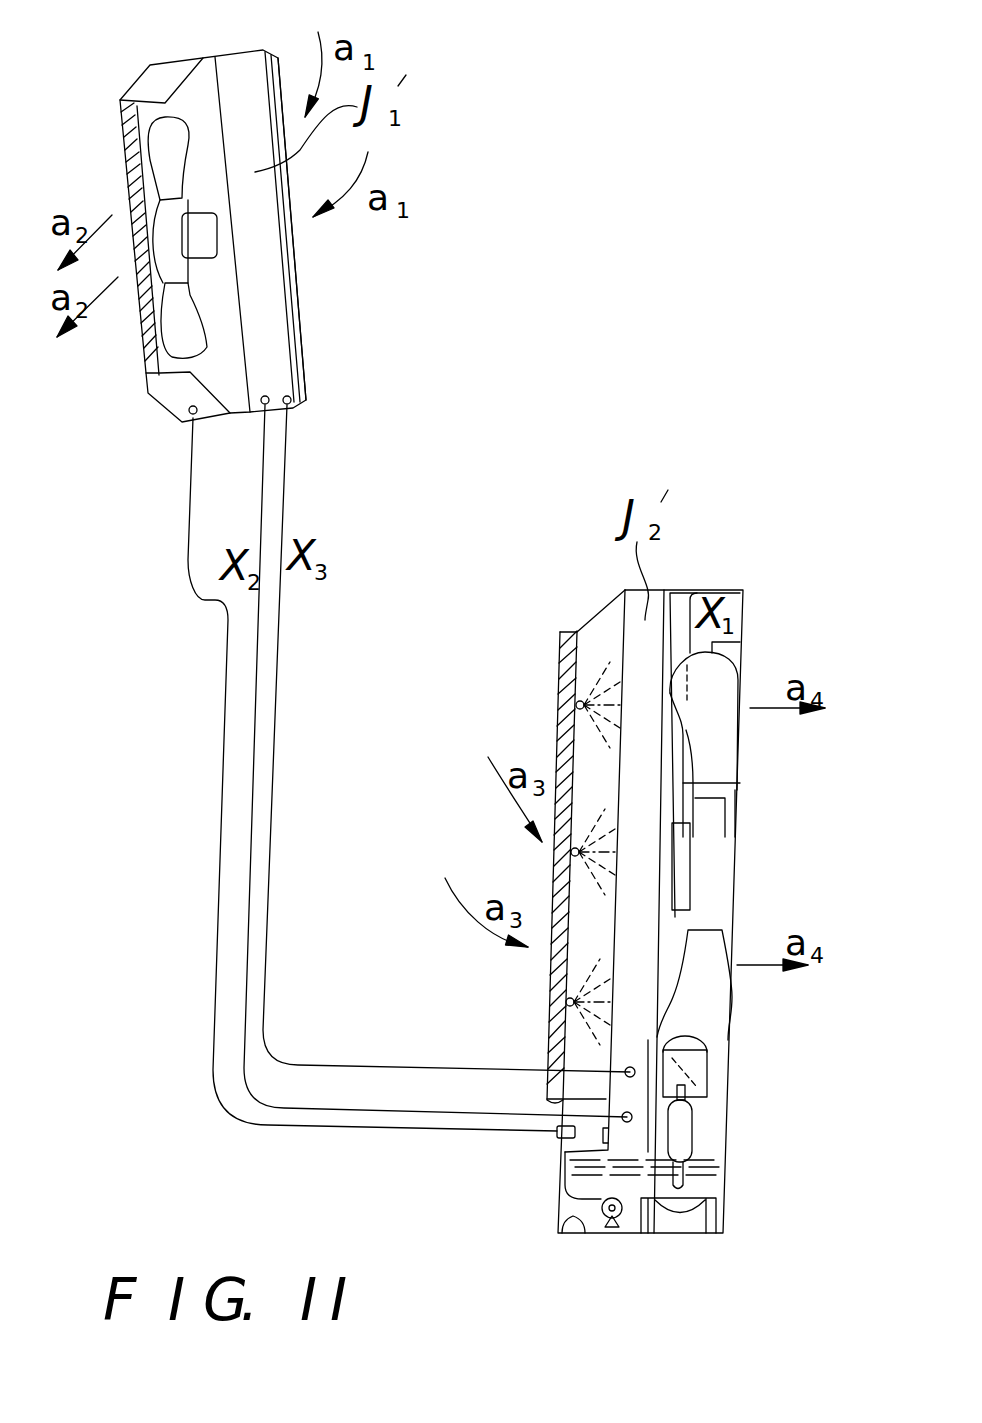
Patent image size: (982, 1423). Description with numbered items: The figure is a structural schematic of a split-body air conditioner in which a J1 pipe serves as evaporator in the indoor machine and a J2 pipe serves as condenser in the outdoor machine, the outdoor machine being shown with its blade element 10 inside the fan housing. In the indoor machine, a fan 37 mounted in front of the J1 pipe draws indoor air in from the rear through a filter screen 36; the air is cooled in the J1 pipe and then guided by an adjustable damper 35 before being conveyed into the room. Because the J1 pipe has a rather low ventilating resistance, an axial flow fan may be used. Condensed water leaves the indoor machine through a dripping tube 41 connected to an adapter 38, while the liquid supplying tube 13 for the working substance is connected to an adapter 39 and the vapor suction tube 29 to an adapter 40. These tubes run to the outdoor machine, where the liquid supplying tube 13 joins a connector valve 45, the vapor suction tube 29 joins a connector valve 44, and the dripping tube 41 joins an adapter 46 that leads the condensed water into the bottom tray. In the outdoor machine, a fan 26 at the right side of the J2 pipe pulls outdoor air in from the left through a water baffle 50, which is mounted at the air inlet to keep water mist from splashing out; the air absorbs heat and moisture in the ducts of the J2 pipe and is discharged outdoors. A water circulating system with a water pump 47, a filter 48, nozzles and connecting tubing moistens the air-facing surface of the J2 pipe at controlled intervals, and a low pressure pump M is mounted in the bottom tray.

The fan 10 is at (737, 787).
The liquid supplying tube 13 is at (265, 502).
The fan 26 is at (718, 687).
The vapor suction tube 29 is at (287, 470).
The adjustable damper 35 is at (130, 127).
The filter screen 36 is at (297, 268).
The fan 37 is at (163, 175).
The adapter 38 is at (189, 408).
The adapter 39 is at (268, 395).
The adapter 40 is at (291, 397).
The dripping tube 41 is at (188, 535).
The connector valve 44 is at (625, 1072).
The connector valve 45 is at (622, 1117).
The adapter 46 is at (557, 1134).
The water pump 47 is at (595, 1203).
The filter 48 is at (573, 1234).
The water baffle 50 is at (565, 645).
The low pressure pump M is at (700, 1037).